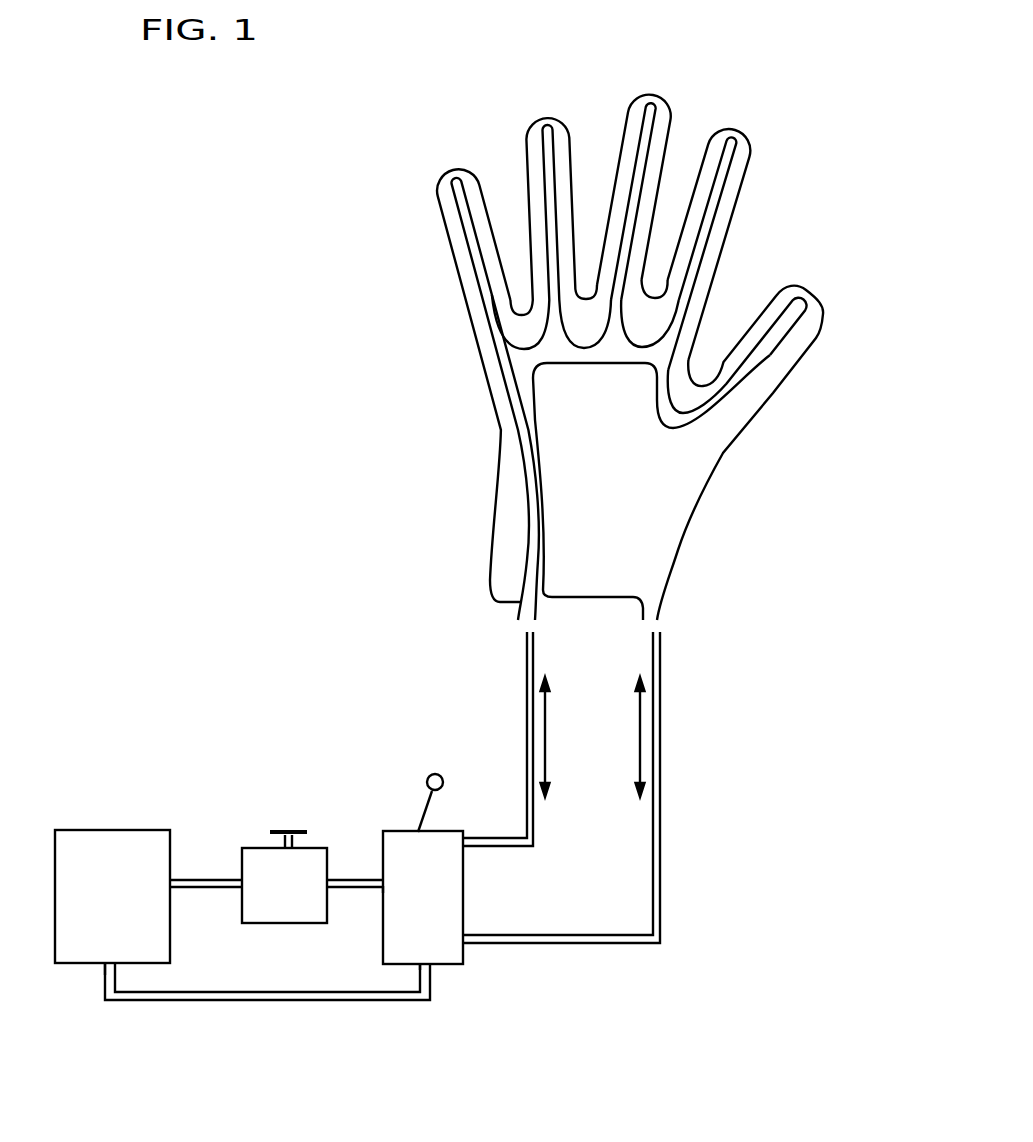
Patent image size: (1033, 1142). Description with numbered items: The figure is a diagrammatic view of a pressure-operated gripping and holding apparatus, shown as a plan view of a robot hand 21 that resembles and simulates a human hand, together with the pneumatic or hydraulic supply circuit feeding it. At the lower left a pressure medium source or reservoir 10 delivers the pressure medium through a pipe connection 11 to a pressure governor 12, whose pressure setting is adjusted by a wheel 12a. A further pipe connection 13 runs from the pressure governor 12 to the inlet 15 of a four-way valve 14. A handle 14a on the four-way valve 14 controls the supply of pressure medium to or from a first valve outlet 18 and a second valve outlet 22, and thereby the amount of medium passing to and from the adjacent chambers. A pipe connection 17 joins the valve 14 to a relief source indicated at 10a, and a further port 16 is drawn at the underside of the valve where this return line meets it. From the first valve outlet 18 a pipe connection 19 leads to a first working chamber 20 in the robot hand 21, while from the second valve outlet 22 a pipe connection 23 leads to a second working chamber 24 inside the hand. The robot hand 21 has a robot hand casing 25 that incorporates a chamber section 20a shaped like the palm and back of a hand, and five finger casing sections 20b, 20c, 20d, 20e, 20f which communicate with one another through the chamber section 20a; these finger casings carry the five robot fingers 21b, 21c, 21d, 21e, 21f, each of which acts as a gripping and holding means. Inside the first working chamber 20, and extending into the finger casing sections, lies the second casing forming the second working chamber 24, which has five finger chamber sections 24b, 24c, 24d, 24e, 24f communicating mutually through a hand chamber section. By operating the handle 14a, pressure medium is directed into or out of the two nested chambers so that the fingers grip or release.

The pressure medium source or reservoir 10 is at (107, 853).
The relief source 10a is at (103, 965).
The pipe connection 11 is at (207, 880).
The pressure governor 12 is at (307, 880).
The wheel 12a is at (283, 827).
The pipe connection 13 is at (357, 880).
The four-way valve 14 is at (427, 847).
The handle 14a is at (420, 803).
The inlet 15 is at (380, 893).
The pump return outlet 16 is at (432, 966).
The pipe connection 17 is at (285, 1002).
The first valve outlet 18 is at (466, 941).
The pipe connection 19 is at (661, 928).
The first working chamber 20 is at (531, 497).
The chamber section 20a is at (635, 555).
The finger casing section 20b is at (760, 398).
The finger casing section 20c is at (737, 207).
The finger casing section 20d is at (640, 117).
The finger casing section 20e is at (533, 152).
The finger casing section 20f is at (457, 245).
The robot hand 21 is at (697, 500).
The robot finger 21b is at (816, 292).
The robot finger 21c is at (750, 173).
The robot finger 21d is at (655, 90).
The robot finger 21e is at (541, 110).
The robot finger 21f is at (437, 200).
The second valve outlet 22 is at (468, 848).
The pipe connection 23 is at (533, 836).
The second working chamber 24 is at (535, 362).
The finger chamber section 24b is at (777, 337).
The finger chamber section 24c is at (707, 240).
The finger chamber section 24d is at (647, 162).
The finger chamber section 24e is at (548, 188).
The finger chamber section 24f is at (483, 290).
The robot hand casing 25 is at (500, 435).